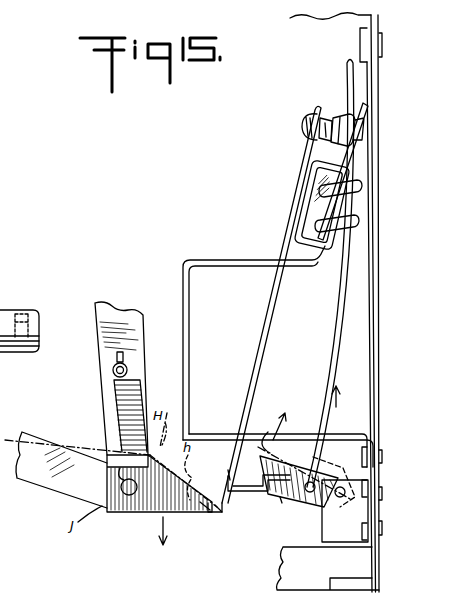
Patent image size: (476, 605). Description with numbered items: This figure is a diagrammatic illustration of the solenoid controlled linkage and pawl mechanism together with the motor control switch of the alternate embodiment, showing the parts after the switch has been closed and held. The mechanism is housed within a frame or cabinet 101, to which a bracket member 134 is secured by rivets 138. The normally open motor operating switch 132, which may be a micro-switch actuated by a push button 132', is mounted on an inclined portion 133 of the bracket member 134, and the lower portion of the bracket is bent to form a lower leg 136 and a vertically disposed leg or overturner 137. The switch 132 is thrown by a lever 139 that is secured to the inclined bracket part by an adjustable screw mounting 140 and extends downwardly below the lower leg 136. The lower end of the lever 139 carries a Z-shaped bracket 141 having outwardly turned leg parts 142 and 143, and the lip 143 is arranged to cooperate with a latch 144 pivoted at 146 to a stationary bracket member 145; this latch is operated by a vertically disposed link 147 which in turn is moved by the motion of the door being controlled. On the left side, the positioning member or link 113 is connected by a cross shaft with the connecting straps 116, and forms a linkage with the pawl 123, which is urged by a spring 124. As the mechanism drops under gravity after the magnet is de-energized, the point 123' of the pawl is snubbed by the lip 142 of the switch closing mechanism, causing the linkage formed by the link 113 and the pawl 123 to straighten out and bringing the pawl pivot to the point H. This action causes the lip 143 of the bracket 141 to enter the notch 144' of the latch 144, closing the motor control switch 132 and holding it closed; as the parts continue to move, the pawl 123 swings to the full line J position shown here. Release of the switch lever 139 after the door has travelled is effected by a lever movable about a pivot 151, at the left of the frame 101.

The frame 101 is at (373, 207).
The rivets 138 is at (380, 45).
The overturner 137 is at (189, 352).
The lever 139 is at (269, 344).
The link 147 is at (336, 333).
The adjustable screw mounting 140 is at (321, 112).
The inclined portion 133 is at (372, 131).
The bracket member 134 is at (358, 112).
The motor operating switch 132 is at (365, 191).
The push button 132' is at (295, 205).
The pivot 151 is at (4, 318).
The connecting straps 116 is at (104, 313).
The spring 124 is at (112, 404).
The pawl 123 is at (161, 483).
The positioning member 113 is at (31, 435).
The lower leg 136 is at (218, 437).
The Z-shaped bracket 141 is at (247, 512).
The lip 143 is at (264, 496).
The lip 142 is at (222, 536).
The point of the pawl 123' is at (193, 531).
The latch 144 is at (301, 449).
The notch 144' is at (284, 518).
The stationary bracket member 145 is at (350, 513).
The pivot 146 is at (346, 487).